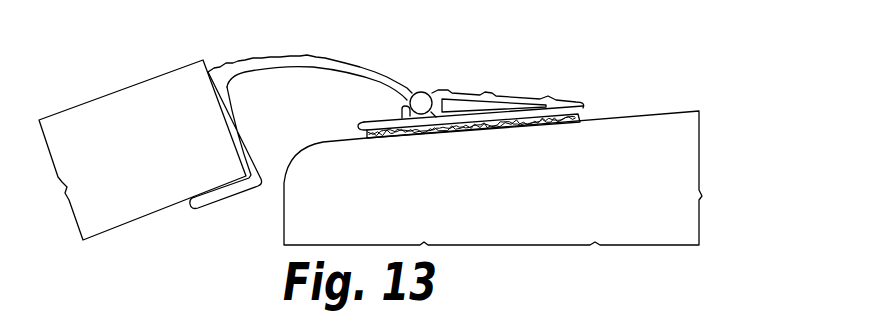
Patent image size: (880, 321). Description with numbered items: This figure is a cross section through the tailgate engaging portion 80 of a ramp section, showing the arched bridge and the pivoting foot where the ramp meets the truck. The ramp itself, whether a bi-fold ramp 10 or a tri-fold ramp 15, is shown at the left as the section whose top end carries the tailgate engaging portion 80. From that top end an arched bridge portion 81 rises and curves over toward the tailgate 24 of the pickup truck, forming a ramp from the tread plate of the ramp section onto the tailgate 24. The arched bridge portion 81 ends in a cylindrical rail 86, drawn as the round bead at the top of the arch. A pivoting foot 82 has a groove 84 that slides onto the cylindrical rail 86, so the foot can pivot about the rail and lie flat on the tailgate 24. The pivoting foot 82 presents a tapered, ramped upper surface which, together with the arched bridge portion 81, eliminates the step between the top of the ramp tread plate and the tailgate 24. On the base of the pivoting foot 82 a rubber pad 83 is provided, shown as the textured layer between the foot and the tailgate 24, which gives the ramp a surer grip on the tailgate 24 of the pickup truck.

The bi-fold ramp 10 is at (142, 150).
The tri-fold ramp 15 is at (182, 156).
The tailgate 24 is at (522, 197).
The tailgate engaging portion 80 is at (473, 116).
The arched bridge portion 81 is at (345, 53).
The pivoting foot 82 is at (507, 70).
The rubber pad 83 is at (506, 103).
The groove 84 is at (517, 53).
The cylindrical rail 86 is at (408, 96).